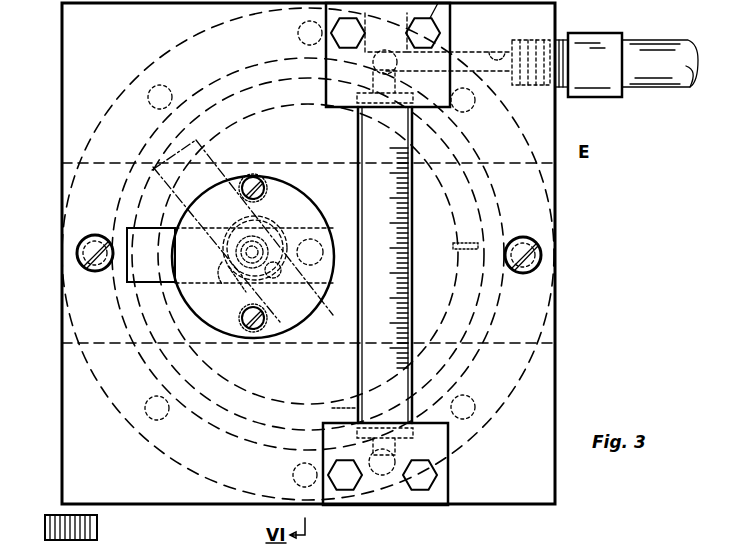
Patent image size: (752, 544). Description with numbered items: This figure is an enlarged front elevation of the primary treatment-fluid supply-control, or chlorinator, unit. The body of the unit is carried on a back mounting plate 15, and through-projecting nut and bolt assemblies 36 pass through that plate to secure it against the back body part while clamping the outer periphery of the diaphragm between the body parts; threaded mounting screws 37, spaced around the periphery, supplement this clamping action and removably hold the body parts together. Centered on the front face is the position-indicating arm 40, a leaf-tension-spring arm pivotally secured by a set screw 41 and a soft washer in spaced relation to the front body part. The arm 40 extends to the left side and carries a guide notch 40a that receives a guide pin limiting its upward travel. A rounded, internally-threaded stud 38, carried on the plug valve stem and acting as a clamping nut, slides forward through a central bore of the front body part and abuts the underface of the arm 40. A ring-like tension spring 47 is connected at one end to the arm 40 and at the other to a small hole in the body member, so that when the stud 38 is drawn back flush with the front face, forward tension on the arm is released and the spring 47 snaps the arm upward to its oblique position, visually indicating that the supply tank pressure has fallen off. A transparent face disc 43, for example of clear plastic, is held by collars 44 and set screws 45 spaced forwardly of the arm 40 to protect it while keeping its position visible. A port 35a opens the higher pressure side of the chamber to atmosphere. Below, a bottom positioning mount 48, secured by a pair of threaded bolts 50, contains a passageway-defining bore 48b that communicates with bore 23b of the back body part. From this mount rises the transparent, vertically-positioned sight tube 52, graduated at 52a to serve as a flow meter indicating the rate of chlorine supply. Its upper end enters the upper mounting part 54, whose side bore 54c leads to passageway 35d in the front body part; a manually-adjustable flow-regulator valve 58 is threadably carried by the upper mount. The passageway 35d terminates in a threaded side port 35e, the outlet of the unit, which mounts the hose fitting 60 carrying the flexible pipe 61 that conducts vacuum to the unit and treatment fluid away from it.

The back mounting plate 15 is at (62, 361).
The threaded mounting screws 37 is at (166, 86).
The nut and bolt assemblies 36 is at (78, 250).
The face disc 43 is at (332, 202).
The set screws 45 is at (266, 187).
The collars 44 is at (260, 198).
The set screw 41 is at (236, 257).
The ring-like tension spring 47 is at (222, 290).
The guide notch 40a is at (228, 270).
The position-indicating arm 40 is at (161, 283).
The stud 38 is at (320, 274).
The sight tube 52 is at (410, 204).
The graduations 52a is at (410, 280).
The port 35a is at (478, 246).
The upper mounting part 54 is at (452, 21).
The side bore 54c is at (366, 32).
The passageway 35d is at (485, 45).
The threaded side port 35e is at (527, 38).
The hose fitting 60 is at (607, 33).
The flexible pipe 61 is at (668, 90).
The bottom positioning mount 48 is at (450, 450).
The passageway-defining bore 48b is at (382, 466).
The threaded bolts 50 is at (436, 481).
The passageway-defining bore 23b is at (333, 412).
The flow-regulator valve 58 is at (45, 527).